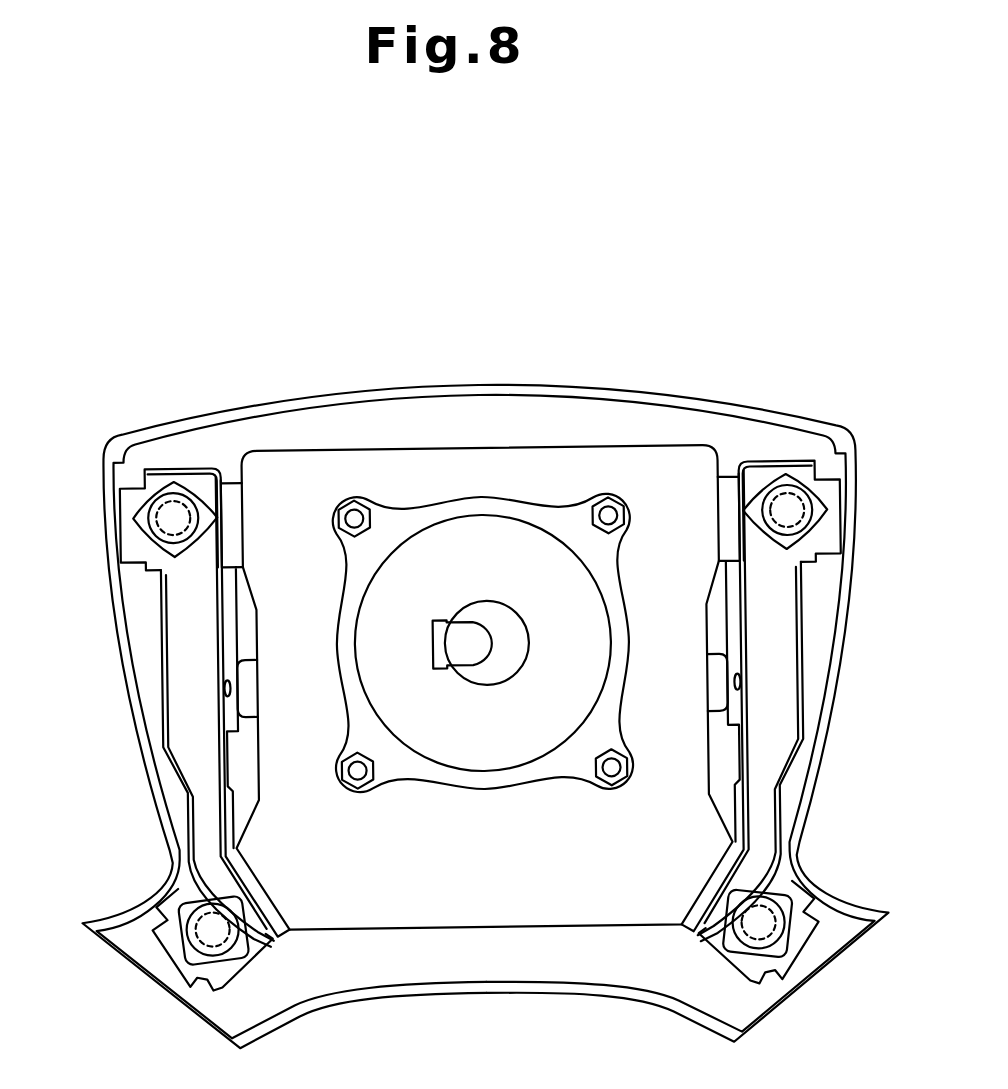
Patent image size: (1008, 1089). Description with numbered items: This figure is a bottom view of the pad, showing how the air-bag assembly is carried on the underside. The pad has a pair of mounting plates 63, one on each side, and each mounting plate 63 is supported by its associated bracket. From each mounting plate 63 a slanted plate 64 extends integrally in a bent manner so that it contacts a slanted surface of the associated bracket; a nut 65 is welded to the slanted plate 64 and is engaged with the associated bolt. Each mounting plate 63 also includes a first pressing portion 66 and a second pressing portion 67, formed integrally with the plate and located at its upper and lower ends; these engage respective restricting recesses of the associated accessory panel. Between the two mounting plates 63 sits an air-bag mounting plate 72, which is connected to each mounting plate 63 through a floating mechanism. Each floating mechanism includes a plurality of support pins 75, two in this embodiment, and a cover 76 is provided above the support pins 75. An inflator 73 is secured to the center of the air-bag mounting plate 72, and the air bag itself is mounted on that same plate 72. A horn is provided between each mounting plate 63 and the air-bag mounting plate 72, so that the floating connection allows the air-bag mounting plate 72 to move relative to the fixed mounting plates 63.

The mounting plate 63 is at (187, 668).
The slanted plate 64 is at (232, 643).
The nut 65 is at (252, 688).
The first pressing portion 66 is at (127, 502).
The second pressing portion 67 is at (190, 973).
The air-bag mounting plate 72 is at (498, 915).
The inflator 73 is at (503, 752).
The support pin 75 is at (148, 530).
The cover 76 is at (533, 390).